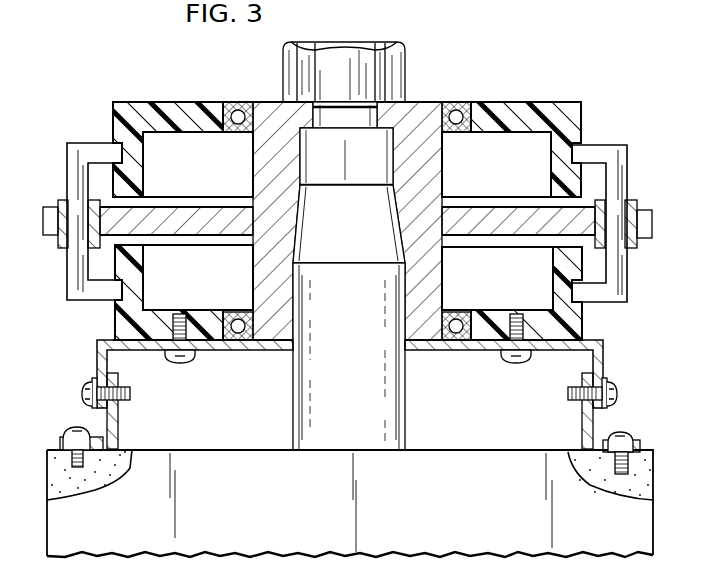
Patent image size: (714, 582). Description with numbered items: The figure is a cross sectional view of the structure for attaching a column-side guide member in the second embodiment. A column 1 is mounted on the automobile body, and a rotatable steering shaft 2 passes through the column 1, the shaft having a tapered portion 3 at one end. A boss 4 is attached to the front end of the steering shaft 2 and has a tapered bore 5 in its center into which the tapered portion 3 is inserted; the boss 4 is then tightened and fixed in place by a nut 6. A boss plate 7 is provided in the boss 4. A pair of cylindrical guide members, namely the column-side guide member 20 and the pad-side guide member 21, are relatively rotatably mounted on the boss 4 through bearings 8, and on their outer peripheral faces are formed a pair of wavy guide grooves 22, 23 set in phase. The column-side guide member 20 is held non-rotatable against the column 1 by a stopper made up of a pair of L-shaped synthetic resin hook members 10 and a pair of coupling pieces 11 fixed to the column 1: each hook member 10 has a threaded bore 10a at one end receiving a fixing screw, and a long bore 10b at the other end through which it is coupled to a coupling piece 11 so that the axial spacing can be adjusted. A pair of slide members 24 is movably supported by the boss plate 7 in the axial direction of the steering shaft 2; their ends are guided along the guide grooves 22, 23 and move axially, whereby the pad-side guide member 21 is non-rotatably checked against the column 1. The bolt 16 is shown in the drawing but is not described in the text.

The column 1 is at (55, 526).
The steering shaft 2 is at (407, 412).
The tapered portion 3 is at (397, 233).
The boss 4 is at (287, 299).
The tapered bore 5 is at (299, 233).
The nut 6 is at (405, 55).
The boss plate 7 is at (213, 213).
The bearings 8 is at (228, 102).
The hook members 10 is at (97, 357).
The threaded bore 10a is at (178, 362).
The long bore 10b is at (126, 400).
The coupling pieces 11 is at (118, 437).
The bolt 16 is at (82, 386).
The column-side guide member 20 is at (143, 286).
The pad-side guide member 21 is at (135, 176).
The wavy guide groove 22 is at (112, 294).
The wavy guide groove 23 is at (118, 145).
The slide members 24 is at (68, 167).